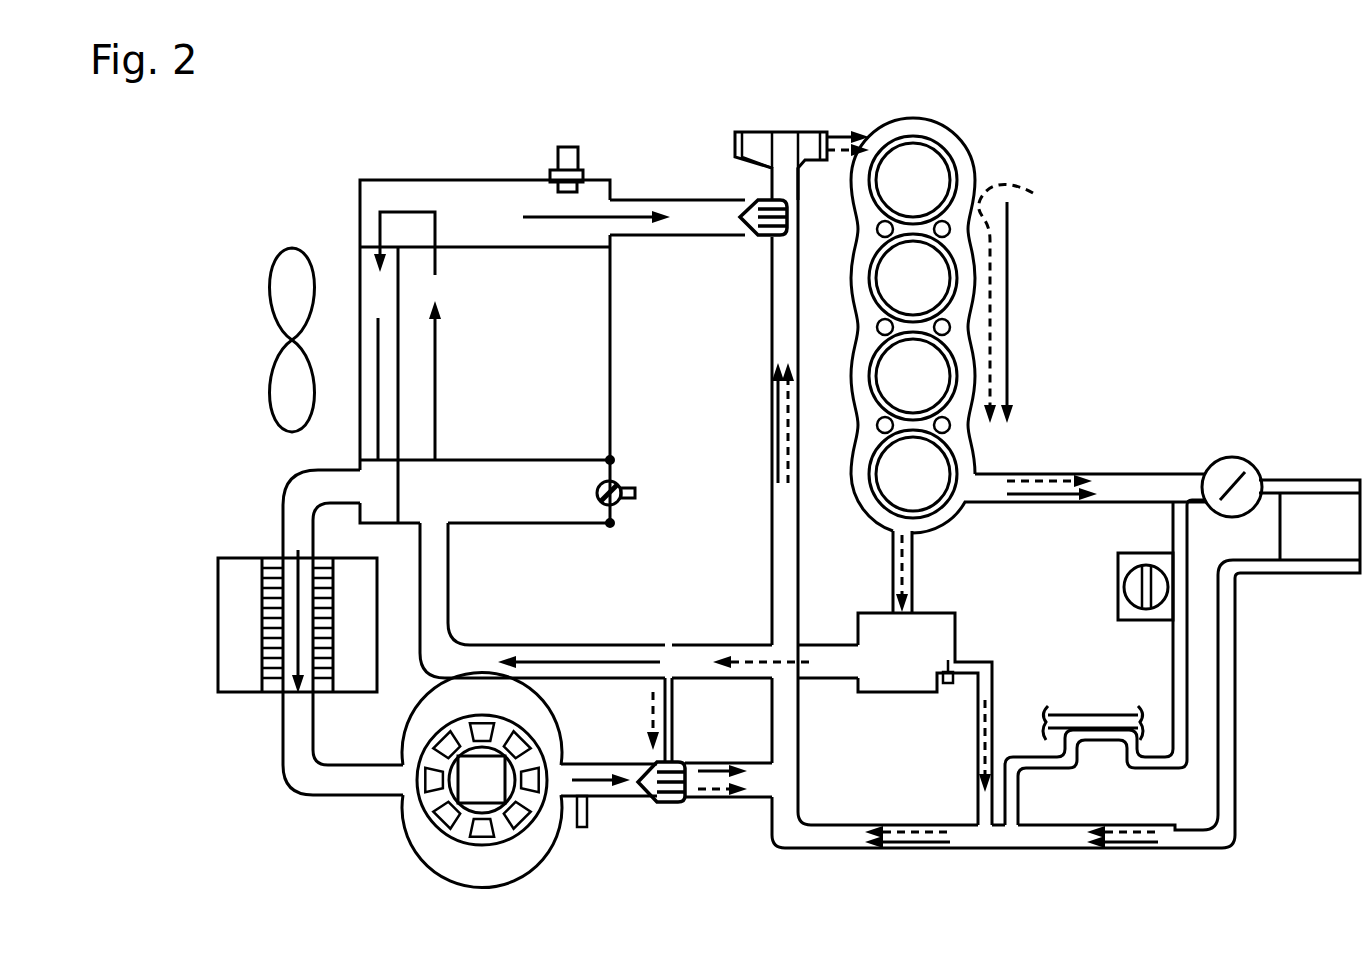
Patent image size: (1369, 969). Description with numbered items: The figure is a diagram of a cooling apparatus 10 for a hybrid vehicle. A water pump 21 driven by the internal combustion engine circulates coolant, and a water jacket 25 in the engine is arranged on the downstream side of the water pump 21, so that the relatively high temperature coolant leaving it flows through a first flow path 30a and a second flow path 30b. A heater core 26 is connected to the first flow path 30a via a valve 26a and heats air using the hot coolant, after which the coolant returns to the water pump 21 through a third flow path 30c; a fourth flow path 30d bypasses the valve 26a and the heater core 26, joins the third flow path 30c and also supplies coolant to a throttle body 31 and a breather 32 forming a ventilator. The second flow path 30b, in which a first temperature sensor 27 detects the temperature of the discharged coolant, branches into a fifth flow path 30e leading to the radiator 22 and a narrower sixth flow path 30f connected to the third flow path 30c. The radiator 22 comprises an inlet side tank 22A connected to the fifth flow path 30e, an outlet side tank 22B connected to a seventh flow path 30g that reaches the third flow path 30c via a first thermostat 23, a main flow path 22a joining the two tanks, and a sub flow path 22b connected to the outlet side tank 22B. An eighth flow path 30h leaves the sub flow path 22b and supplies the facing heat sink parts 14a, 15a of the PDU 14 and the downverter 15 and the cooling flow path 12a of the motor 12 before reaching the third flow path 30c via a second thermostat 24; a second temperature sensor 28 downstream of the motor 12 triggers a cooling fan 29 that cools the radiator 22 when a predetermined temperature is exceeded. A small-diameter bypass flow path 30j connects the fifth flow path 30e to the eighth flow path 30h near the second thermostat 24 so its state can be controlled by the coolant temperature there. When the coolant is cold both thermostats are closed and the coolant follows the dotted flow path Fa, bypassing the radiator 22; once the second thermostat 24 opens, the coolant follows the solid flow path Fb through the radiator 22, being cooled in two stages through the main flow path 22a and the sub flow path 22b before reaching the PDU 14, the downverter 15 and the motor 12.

The cooling apparatus 10 is at (1208, 128).
The motor 12 is at (457, 850).
The cooling flow path 12a is at (418, 822).
The PDU 14 is at (218, 590).
The heat sink part 14a is at (262, 645).
The downverter 15 is at (382, 570).
The heat sink part 15a is at (335, 642).
The water pump 21 is at (742, 132).
The radiator 22 is at (358, 178).
The inlet side tank 22A is at (547, 483).
The outlet side tank 22B is at (456, 205).
The main flow path 22a is at (560, 350).
The sub flow path 22b is at (375, 293).
The first thermostat 23 is at (748, 237).
The second thermostat 24 is at (660, 803).
The water jacket 25 is at (970, 153).
The heater core 26 is at (1343, 480).
The valve 26a is at (1232, 457).
The first temperature sensor 27 is at (948, 685).
The second temperature sensor 28 is at (582, 827).
The cooling fan 29 is at (283, 257).
The first flow path 30a is at (1063, 474).
The second flow path 30b is at (915, 572).
The third flow path 30c is at (772, 532).
The fourth flow path 30d is at (1160, 768).
The fifth flow path 30e is at (648, 645).
The sixth flow path 30f is at (978, 755).
The seventh flow path 30g is at (745, 200).
The eighth flow path 30h is at (283, 505).
The bypass flow path 30j is at (672, 703).
The throttle body 31 is at (1117, 590).
The breather 32 is at (1090, 713).
The flow path Fa is at (1026, 301).
The flow path Fb is at (1007, 302).